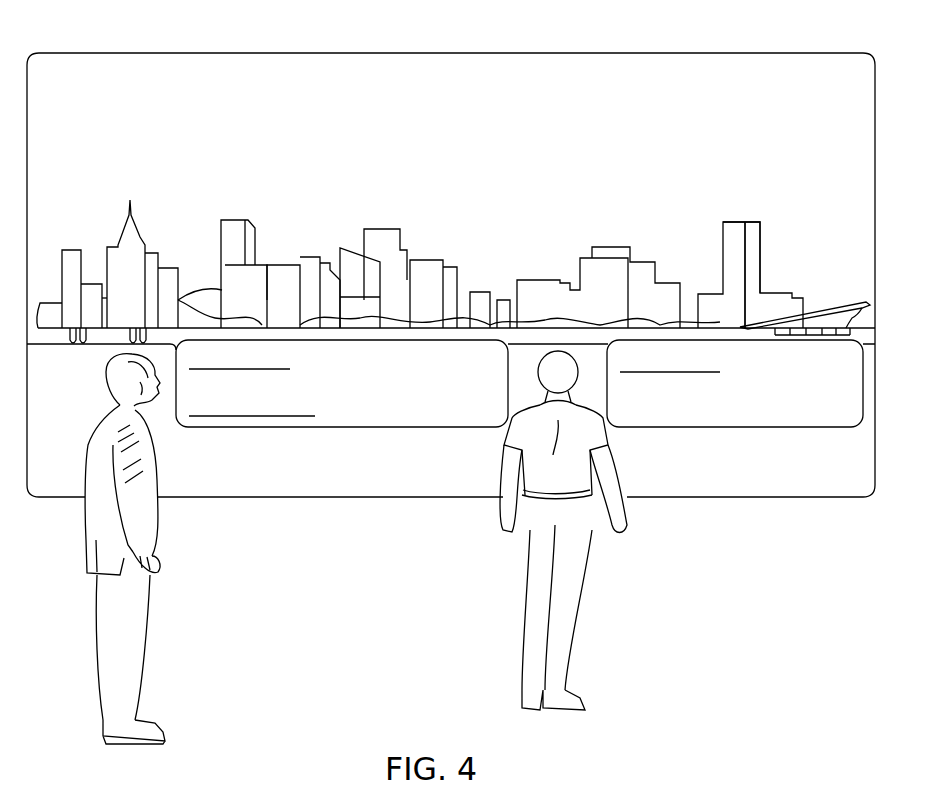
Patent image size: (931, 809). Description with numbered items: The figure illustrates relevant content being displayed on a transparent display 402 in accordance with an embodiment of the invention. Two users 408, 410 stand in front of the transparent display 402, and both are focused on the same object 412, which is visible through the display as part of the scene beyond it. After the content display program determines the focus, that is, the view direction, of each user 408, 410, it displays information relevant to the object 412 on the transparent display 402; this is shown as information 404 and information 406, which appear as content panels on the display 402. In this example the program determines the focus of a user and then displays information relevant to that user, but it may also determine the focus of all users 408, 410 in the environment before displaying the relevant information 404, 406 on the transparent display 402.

The transparent display 402 is at (450, 53).
The information 404 is at (210, 427).
The information 406 is at (688, 427).
The user 408 is at (150, 588).
The user 410 is at (588, 605).
The object 412 is at (749, 222).